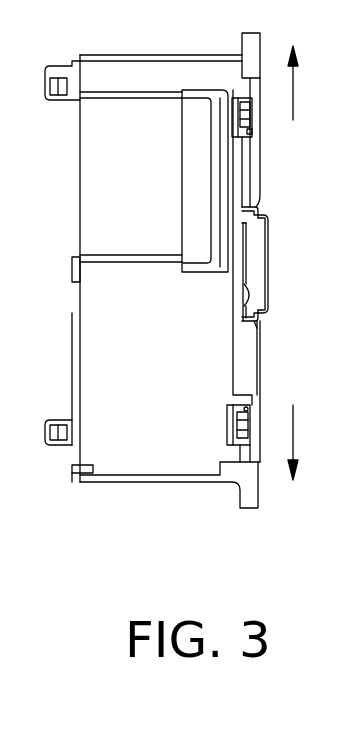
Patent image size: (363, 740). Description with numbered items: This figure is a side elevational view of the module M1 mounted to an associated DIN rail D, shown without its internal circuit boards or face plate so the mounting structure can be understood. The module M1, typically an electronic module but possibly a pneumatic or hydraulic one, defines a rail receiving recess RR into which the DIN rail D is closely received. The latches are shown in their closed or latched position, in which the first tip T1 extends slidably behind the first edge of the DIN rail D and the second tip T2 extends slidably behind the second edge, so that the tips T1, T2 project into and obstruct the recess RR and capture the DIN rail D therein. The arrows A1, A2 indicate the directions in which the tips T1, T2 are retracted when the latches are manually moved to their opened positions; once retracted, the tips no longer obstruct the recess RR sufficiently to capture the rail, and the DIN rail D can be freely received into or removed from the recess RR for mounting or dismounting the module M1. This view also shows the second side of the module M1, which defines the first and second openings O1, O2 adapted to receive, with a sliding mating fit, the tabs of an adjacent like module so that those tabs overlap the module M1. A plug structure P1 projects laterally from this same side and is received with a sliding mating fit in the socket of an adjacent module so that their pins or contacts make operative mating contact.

The module M1 is at (116, 136).
The first opening O1 is at (243, 112).
The second opening O2 is at (231, 425).
The plug structure P1 is at (220, 175).
The first tip T1 is at (252, 212).
The second tip T2 is at (254, 326).
The DIN rail D is at (269, 247).
The rail receiving recess RR is at (264, 282).
The arrow A1 is at (294, 102).
The arrow A2 is at (295, 440).